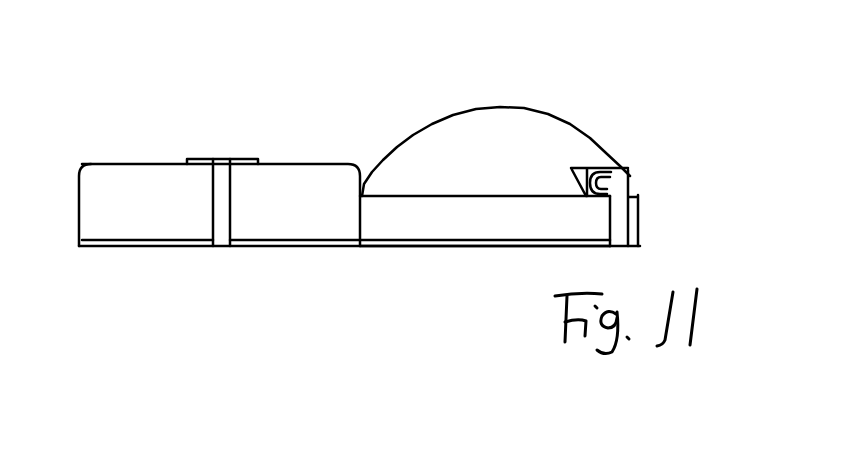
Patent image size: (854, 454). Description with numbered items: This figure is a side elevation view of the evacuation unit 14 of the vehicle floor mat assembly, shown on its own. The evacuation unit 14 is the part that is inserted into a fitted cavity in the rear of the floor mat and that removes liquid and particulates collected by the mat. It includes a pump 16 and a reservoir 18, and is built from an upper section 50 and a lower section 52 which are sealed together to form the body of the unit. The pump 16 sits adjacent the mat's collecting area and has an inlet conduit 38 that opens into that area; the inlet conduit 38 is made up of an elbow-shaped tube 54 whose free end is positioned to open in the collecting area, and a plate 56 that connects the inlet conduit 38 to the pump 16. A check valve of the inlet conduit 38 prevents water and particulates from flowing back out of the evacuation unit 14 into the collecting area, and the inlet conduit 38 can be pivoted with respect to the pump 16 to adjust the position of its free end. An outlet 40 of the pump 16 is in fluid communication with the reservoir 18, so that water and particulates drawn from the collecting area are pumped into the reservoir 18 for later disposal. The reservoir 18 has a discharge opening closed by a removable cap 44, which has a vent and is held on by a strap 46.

The evacuation unit 14 is at (375, 102).
The pump 16 is at (520, 140).
The reservoir 18 is at (145, 213).
The inlet conduit 38 is at (635, 204).
The outlet 40 is at (368, 174).
The removable cap 44 is at (245, 160).
The strap 46 is at (223, 213).
The upper section 50 is at (120, 162).
The lower section 52 is at (403, 250).
The elbow-shaped tube 54 is at (617, 226).
The plate 56 is at (597, 168).